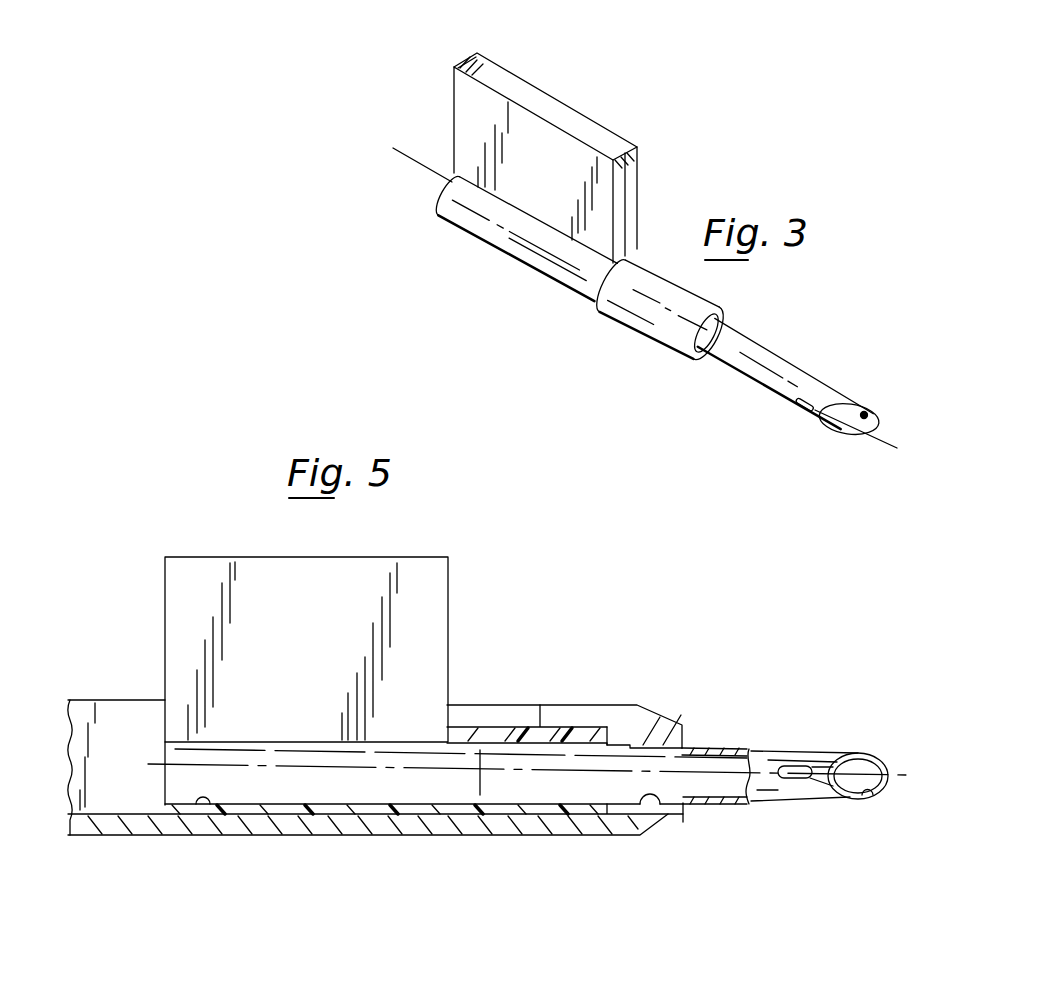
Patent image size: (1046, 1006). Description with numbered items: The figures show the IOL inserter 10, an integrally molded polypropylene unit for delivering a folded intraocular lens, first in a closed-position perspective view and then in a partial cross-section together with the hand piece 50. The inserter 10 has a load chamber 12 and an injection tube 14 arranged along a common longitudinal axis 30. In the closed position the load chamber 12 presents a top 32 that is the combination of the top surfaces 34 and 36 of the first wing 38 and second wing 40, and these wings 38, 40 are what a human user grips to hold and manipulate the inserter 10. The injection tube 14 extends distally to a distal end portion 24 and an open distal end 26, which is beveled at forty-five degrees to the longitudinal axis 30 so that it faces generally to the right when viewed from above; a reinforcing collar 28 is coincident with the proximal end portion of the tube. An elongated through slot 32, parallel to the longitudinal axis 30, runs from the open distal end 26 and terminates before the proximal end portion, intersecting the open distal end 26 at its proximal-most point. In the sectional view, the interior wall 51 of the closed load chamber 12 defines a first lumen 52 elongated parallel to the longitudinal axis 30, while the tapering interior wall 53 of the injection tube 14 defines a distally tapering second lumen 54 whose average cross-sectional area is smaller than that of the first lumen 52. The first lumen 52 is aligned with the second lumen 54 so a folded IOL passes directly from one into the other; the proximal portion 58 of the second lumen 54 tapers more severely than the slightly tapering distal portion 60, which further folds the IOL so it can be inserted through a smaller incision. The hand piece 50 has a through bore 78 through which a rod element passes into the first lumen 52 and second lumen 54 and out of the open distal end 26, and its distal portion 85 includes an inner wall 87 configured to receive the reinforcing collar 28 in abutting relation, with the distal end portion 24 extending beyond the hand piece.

In FIG. 3, the IOL inserter 10 is at (440, 255).
In FIG. 5, the IOL inserter 10 is at (498, 606).
In FIG. 3, the load chamber 12 is at (502, 262).
In FIG. 5, the load chamber 12 is at (142, 662).
In FIG. 3, the injection tube 14 is at (737, 402).
In FIG. 5, the injection tube 14 is at (714, 826).
In FIG. 3, the distal end portion 24 is at (810, 357).
In FIG. 5, the distal end portion 24 is at (748, 752).
In FIG. 3, the open distal end 26 is at (877, 410).
In FIG. 5, the open distal end 26 is at (873, 795).
In FIG. 3, the reinforcing collar 28 is at (643, 323).
In FIG. 5, the reinforcing collar 28 is at (570, 743).
In FIG. 3, the longitudinal axis 30 is at (877, 443).
In FIG. 5, the longitudinal axis 30 is at (902, 773).
In FIG. 3, the through slot 32 is at (466, 52).
In FIG. 5, the through slot 32 is at (213, 548).
In FIG. 3, the top surface 34 is at (457, 77).
In FIG. 3, the top surface 36 is at (558, 100).
In FIG. 3, the first wing 38 is at (473, 113).
In FIG. 3, the second wing 40 is at (633, 193).
In FIG. 5, the hand piece 50 is at (648, 676).
In FIG. 5, the interior wall 51 is at (197, 803).
In FIG. 5, the first lumen 52 is at (277, 781).
In FIG. 5, the tapering interior wall 53 is at (660, 807).
In FIG. 5, the second lumen 54 is at (577, 781).
In FIG. 5, the proximal portion 58 is at (515, 781).
In FIG. 5, the distal portion 60 is at (713, 778).
In FIG. 5, the through bore 78 is at (134, 756).
In FIG. 5, the distal portion 85 is at (671, 698).
In FIG. 5, the inner wall 87 is at (590, 745).